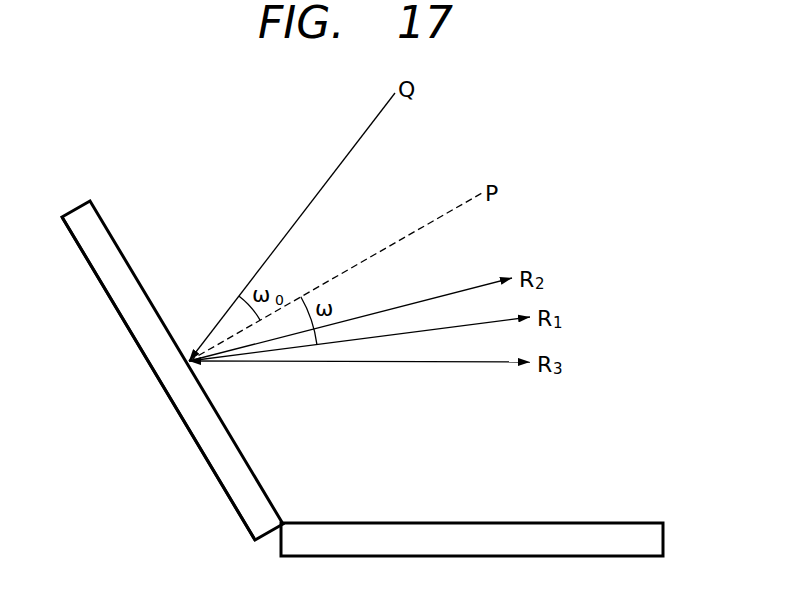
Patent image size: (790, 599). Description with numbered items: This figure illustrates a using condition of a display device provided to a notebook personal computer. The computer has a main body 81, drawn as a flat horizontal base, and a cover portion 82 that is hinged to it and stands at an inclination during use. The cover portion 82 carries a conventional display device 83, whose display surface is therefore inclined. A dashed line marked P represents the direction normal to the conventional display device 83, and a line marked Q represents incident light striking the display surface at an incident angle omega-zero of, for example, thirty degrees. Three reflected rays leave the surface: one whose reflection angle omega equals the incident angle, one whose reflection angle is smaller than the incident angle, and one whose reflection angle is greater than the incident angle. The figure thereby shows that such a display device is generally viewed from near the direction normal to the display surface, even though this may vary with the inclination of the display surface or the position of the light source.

The main body 81 is at (604, 522).
The cover portion 82 is at (200, 453).
The conventional display device 83 is at (108, 224).